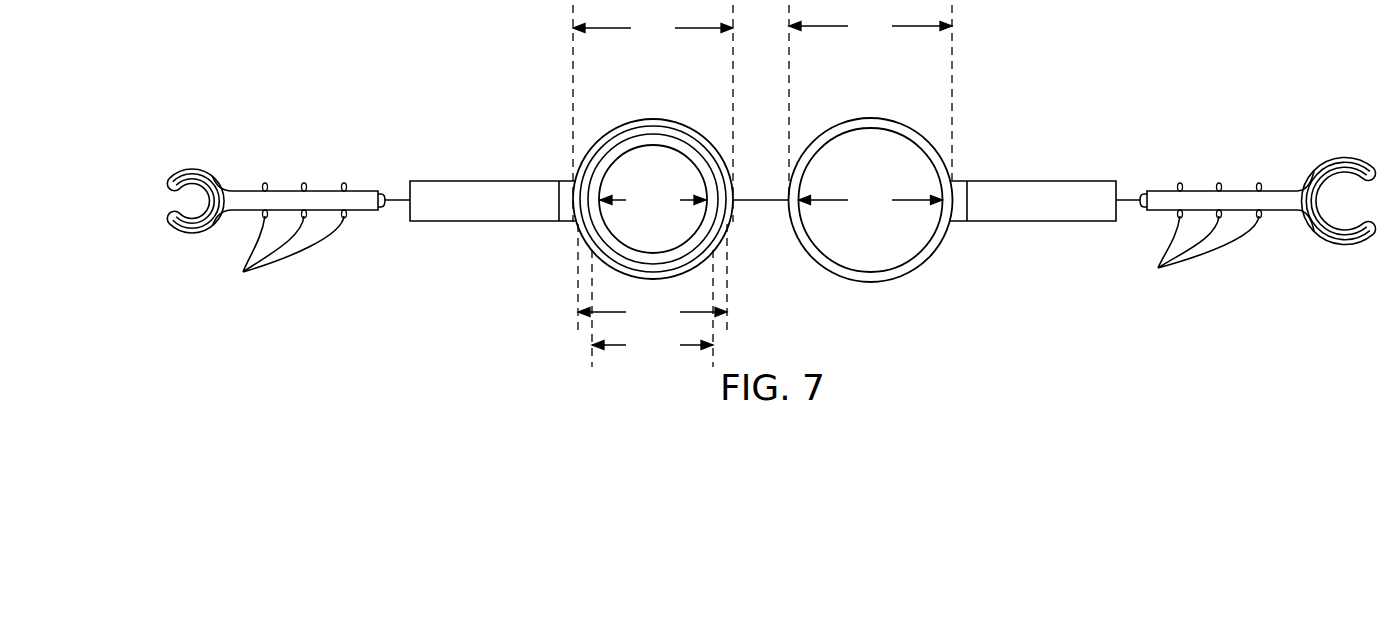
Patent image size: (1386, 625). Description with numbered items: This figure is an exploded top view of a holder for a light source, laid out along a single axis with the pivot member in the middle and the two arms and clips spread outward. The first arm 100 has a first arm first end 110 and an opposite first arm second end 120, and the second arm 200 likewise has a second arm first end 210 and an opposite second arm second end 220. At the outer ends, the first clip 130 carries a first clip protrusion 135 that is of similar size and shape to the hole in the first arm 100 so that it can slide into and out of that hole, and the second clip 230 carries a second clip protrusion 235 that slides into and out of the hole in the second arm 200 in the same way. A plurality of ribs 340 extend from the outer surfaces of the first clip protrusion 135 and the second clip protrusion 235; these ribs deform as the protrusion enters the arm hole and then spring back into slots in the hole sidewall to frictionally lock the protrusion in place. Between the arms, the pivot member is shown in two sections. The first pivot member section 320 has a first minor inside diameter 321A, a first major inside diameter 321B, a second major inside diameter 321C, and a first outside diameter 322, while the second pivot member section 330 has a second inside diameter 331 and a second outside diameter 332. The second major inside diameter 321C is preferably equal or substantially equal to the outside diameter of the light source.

The first arm 100 is at (489, 213).
The first arm first end 110 is at (412, 193).
The first arm second end 120 is at (556, 192).
The first clip 130 is at (184, 160).
The first clip protrusion 135 is at (283, 196).
The second arm 200 is at (1035, 213).
The second arm first end 210 is at (1111, 192).
The second arm second end 220 is at (970, 192).
The second clip 230 is at (1343, 152).
The second clip protrusion 235 is at (1197, 196).
The first pivot member section 320 is at (650, 122).
The first minor inside diameter 321A is at (653, 200).
The first major inside diameter 321B is at (652, 279).
The second major inside diameter 321C is at (652, 308).
The first outside diameter 322 is at (653, 113).
The second pivot member section 330 is at (876, 120).
The second inside diameter 331 is at (871, 200).
The second outside diameter 332 is at (870, 100).
The ribs 340 is at (741, 261).